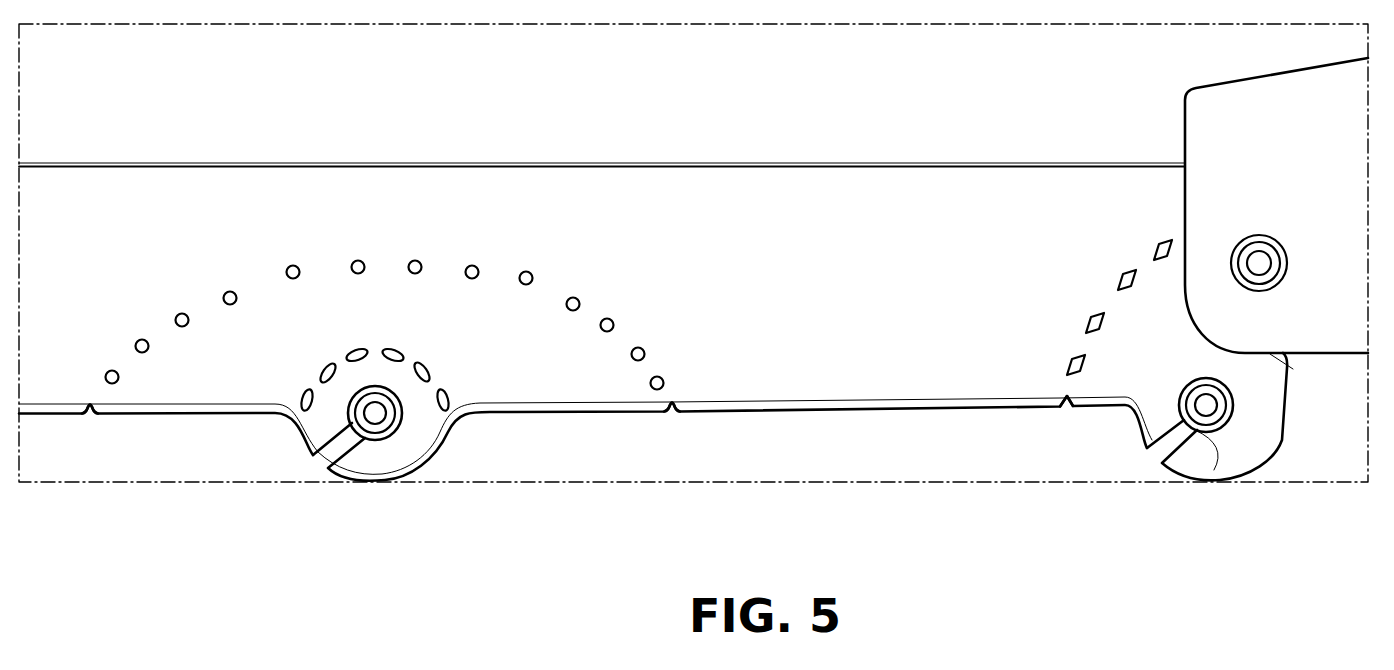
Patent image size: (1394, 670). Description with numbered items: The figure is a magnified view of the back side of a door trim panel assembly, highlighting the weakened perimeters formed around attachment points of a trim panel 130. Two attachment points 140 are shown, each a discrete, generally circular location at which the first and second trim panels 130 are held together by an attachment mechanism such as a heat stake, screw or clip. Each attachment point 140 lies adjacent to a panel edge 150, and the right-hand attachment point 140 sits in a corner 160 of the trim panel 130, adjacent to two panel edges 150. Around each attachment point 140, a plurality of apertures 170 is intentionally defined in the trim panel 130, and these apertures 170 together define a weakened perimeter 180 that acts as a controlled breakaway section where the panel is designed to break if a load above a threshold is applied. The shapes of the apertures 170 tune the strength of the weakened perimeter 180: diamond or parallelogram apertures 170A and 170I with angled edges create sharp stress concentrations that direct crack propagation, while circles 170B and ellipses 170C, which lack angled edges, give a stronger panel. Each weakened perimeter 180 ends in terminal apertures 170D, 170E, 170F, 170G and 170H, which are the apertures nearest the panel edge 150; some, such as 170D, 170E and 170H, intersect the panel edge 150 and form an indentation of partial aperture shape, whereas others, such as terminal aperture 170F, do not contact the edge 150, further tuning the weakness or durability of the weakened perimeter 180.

The trim panel 130 is at (517, 383).
The attachment point 140 is at (376, 418).
The panel edge 150 is at (206, 420).
The corner 160 is at (1286, 443).
The aperture 170 is at (290, 265).
The diamond aperture 170A is at (1090, 313).
The circle aperture 170B is at (182, 313).
The ellipse aperture 170C is at (428, 366).
The terminal aperture 170D is at (90, 405).
The terminal aperture 170E is at (677, 400).
The terminal aperture 170F is at (300, 405).
The terminal aperture 170G is at (446, 398).
The terminal aperture 170H is at (1062, 396).
The opening 170I is at (1158, 243).
The weakened perimeter 180 is at (556, 230).